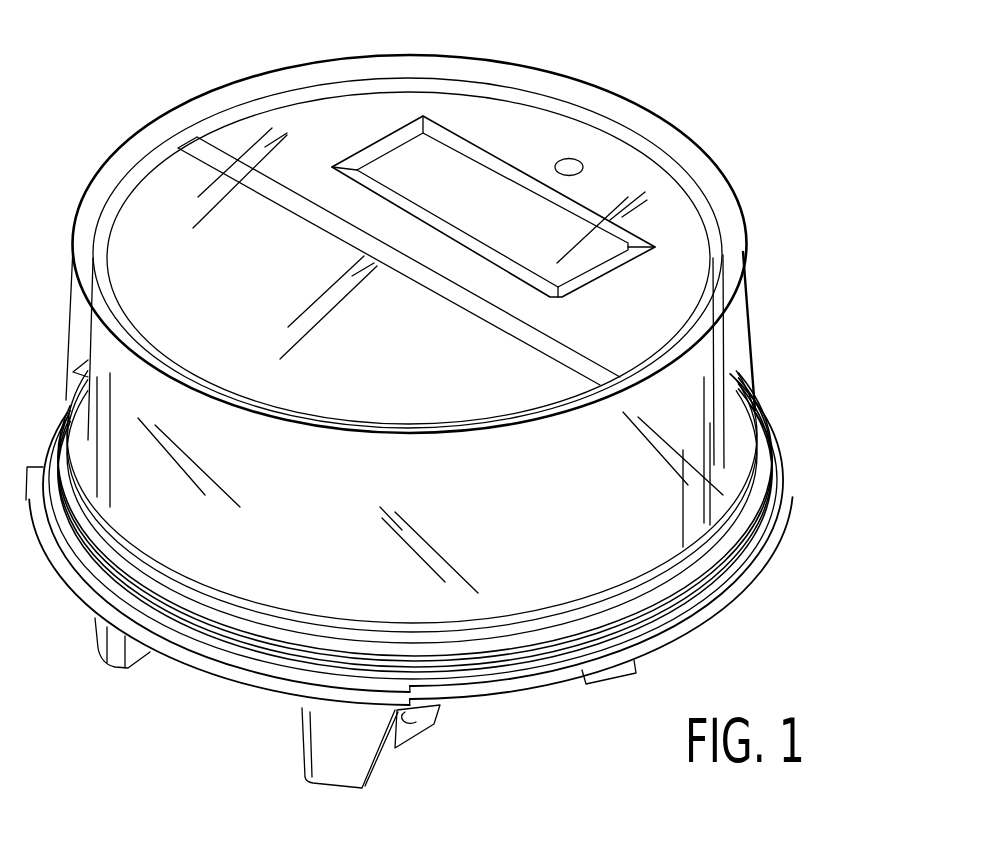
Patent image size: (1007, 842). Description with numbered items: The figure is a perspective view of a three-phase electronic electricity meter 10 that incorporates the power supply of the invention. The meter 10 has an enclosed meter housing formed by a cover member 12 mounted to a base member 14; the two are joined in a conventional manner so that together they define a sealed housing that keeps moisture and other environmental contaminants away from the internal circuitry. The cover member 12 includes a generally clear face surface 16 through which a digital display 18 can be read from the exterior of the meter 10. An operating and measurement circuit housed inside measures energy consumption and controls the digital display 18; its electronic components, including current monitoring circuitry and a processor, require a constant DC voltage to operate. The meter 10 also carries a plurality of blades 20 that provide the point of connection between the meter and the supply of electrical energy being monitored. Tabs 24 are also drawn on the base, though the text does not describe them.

The three-phase electronic electricity meter 10 is at (781, 340).
The cover member 12 is at (683, 142).
The base member 14 is at (793, 488).
The clear face surface 16 is at (497, 72).
The digital display 18 is at (488, 195).
The blades 20 is at (794, 392).
The tabs 24 is at (121, 657).